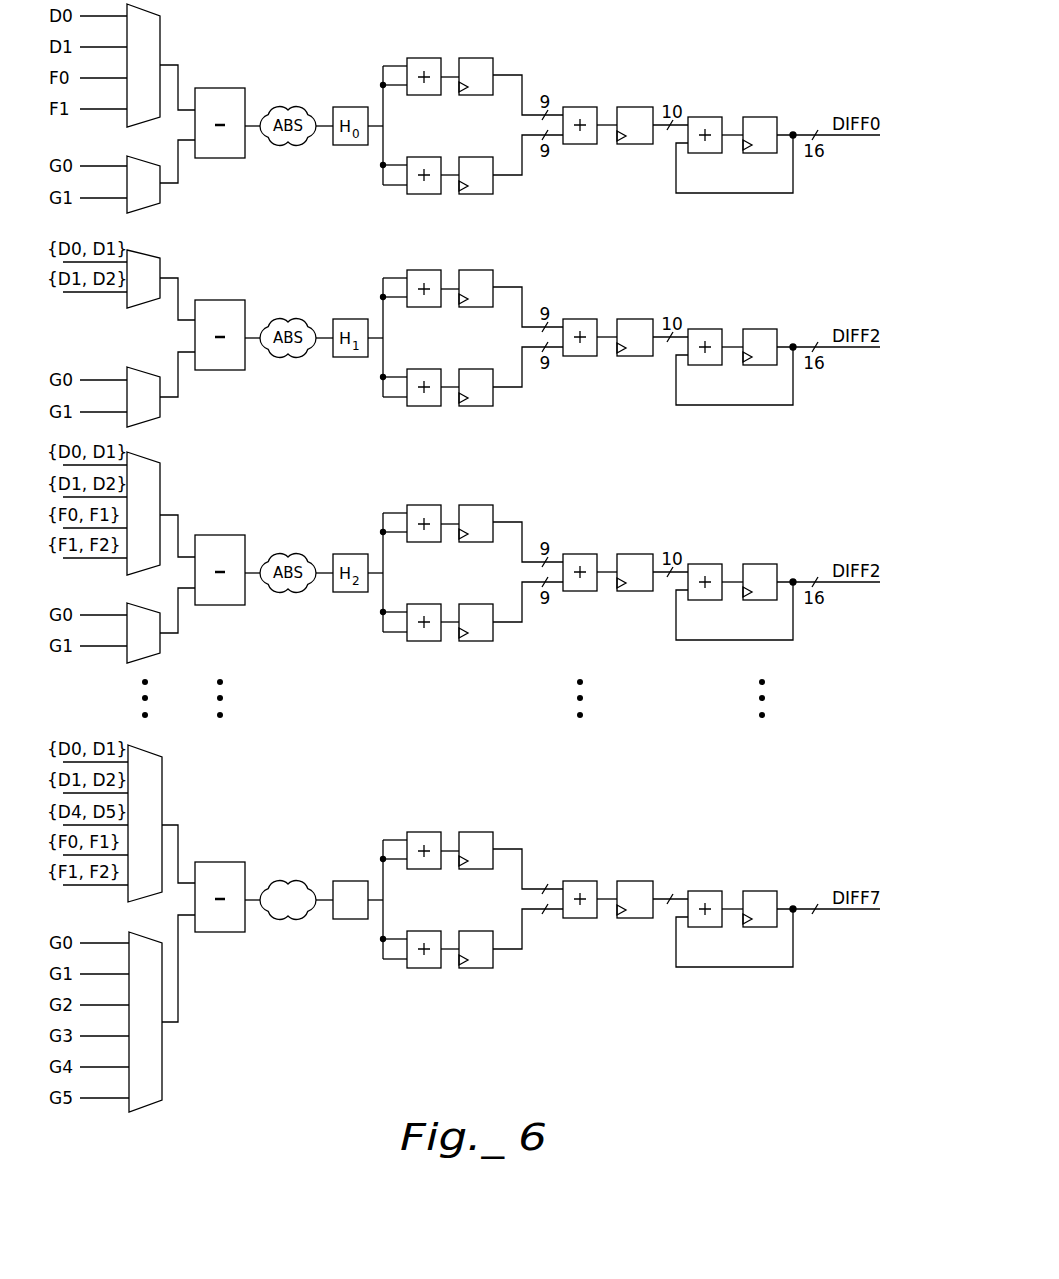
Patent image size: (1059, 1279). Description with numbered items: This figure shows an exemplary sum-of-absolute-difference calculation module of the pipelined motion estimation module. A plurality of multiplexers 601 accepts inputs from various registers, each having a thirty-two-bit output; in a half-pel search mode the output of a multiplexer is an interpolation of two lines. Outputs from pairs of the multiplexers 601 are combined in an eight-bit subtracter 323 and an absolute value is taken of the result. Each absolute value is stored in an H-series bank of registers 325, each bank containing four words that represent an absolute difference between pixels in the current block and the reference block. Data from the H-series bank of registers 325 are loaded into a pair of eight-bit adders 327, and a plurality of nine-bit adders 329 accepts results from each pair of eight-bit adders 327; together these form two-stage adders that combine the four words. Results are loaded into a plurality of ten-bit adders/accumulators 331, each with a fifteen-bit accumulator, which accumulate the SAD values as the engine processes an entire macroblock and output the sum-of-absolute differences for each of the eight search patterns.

The eight-bit subtracter 323 is at (197, 943).
The H-series bank of registers 325 is at (368, 932).
The pair of eight-bit adders 327 is at (522, 978).
The nine-bit adder 329 is at (553, 942).
The ten-bit adder/accumulator 331 is at (677, 978).
The multiplexer 601 is at (162, 1115).